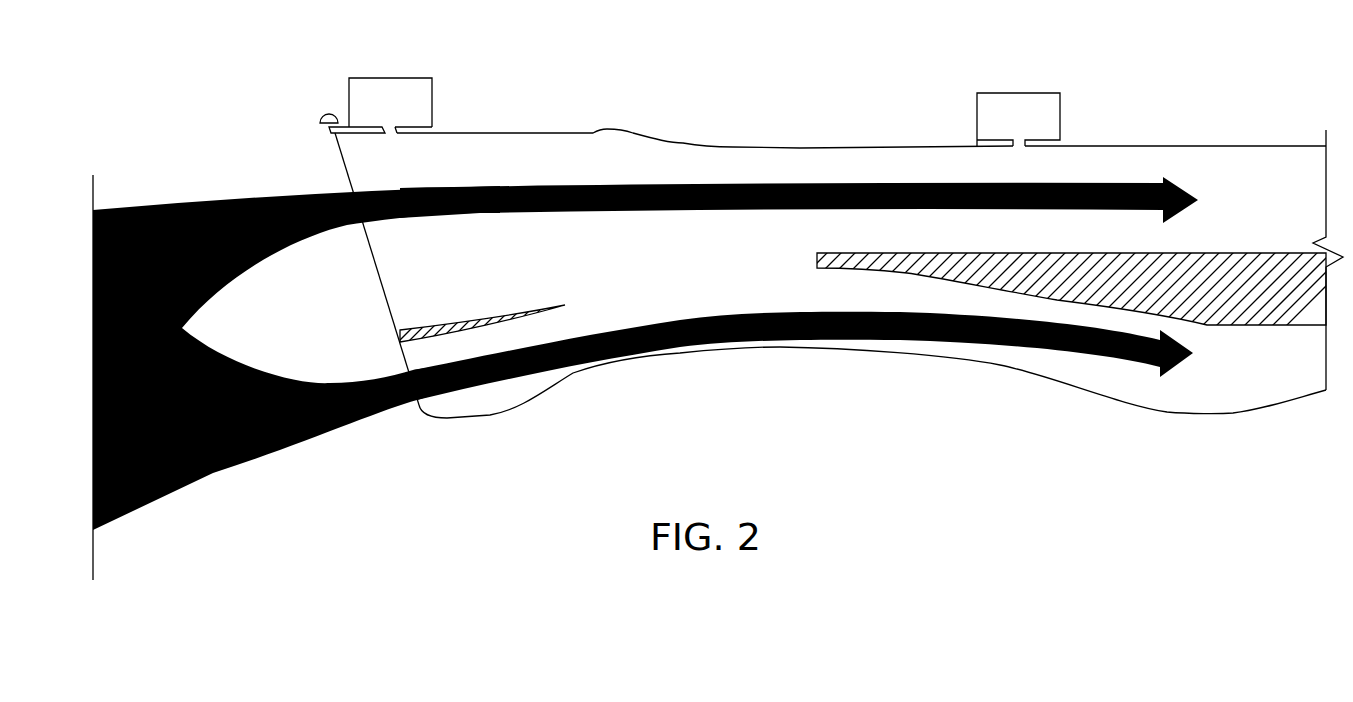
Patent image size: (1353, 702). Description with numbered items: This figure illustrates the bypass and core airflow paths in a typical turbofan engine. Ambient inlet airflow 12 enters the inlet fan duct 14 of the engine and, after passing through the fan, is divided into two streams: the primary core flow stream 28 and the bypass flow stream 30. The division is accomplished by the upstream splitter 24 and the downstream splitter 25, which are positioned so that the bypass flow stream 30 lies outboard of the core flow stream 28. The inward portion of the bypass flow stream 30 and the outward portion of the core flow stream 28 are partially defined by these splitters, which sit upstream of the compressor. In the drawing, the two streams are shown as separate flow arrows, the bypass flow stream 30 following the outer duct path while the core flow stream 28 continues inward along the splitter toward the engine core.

The ambient inlet airflow 12 is at (170, 205).
The inlet fan duct 14 is at (447, 73).
The upstream splitter 24 is at (468, 321).
The downstream splitter 25 is at (817, 257).
The primary (core) flow stream 28 is at (652, 320).
The bypass flow stream 30 is at (830, 182).